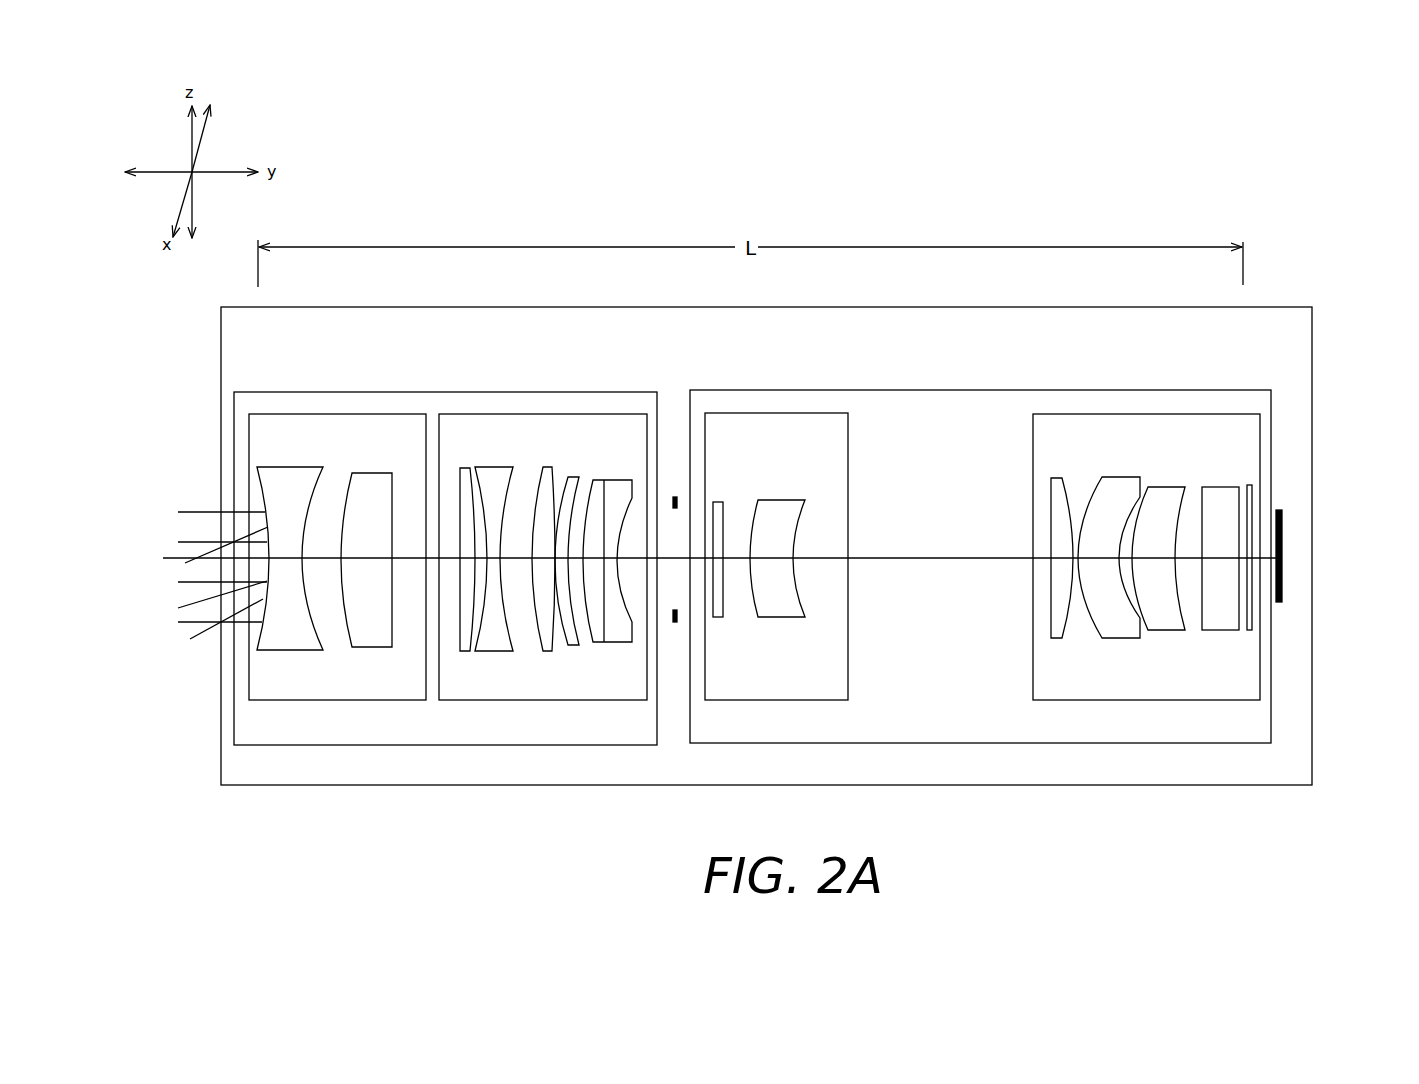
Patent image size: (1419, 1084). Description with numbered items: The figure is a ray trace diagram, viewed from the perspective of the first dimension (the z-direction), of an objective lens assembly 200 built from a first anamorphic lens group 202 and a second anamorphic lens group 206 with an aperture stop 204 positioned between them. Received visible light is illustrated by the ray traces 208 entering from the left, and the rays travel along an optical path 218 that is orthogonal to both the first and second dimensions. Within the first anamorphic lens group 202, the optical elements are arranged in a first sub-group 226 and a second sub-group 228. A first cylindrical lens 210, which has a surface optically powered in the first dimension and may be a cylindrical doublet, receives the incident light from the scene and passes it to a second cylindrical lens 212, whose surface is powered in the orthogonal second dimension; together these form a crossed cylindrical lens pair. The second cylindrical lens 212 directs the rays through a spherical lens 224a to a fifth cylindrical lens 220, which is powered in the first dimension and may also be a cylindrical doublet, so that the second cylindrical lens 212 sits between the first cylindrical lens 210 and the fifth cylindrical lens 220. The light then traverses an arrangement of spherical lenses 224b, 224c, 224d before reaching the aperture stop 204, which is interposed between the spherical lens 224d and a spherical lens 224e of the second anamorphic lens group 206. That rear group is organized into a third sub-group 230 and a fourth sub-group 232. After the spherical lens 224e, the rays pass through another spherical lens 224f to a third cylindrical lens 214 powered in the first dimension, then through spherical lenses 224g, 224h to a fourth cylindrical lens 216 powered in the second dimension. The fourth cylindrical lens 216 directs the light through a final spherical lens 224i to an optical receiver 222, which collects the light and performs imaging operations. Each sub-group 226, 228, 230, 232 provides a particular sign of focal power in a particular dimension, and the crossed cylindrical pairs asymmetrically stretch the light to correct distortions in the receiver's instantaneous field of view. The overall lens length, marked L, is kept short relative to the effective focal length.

The objective lens assembly 200 is at (879, 192).
The first anamorphic lens group 202 is at (382, 390).
The aperture stop 204 is at (677, 498).
The second anamorphic lens group 206 is at (978, 387).
The ray traces 208 is at (193, 480).
The first cylindrical lens 210 is at (290, 650).
The second cylindrical lens 212 is at (372, 647).
The third cylindrical lens 214 is at (1058, 638).
The fourth cylindrical lens 216 is at (1210, 632).
The optical path 218 is at (877, 558).
The fifth cylindrical lens 220 is at (494, 466).
The optical receiver 222 is at (1280, 510).
The spherical lens 224a is at (467, 651).
The spherical lens 224b is at (543, 651).
The spherical lens 224c is at (574, 477).
The spherical lens 224d is at (602, 480).
The spherical lens 224e is at (718, 617).
The spherical lens 224f is at (797, 617).
The spherical lens 224g is at (1110, 477).
The spherical lens 224h is at (1170, 487).
The spherical lens 224i is at (1251, 623).
The first sub-group 226 is at (282, 414).
The second sub-group 228 is at (452, 414).
The third sub-group 230 is at (829, 412).
The fourth sub-group 232 is at (1063, 413).